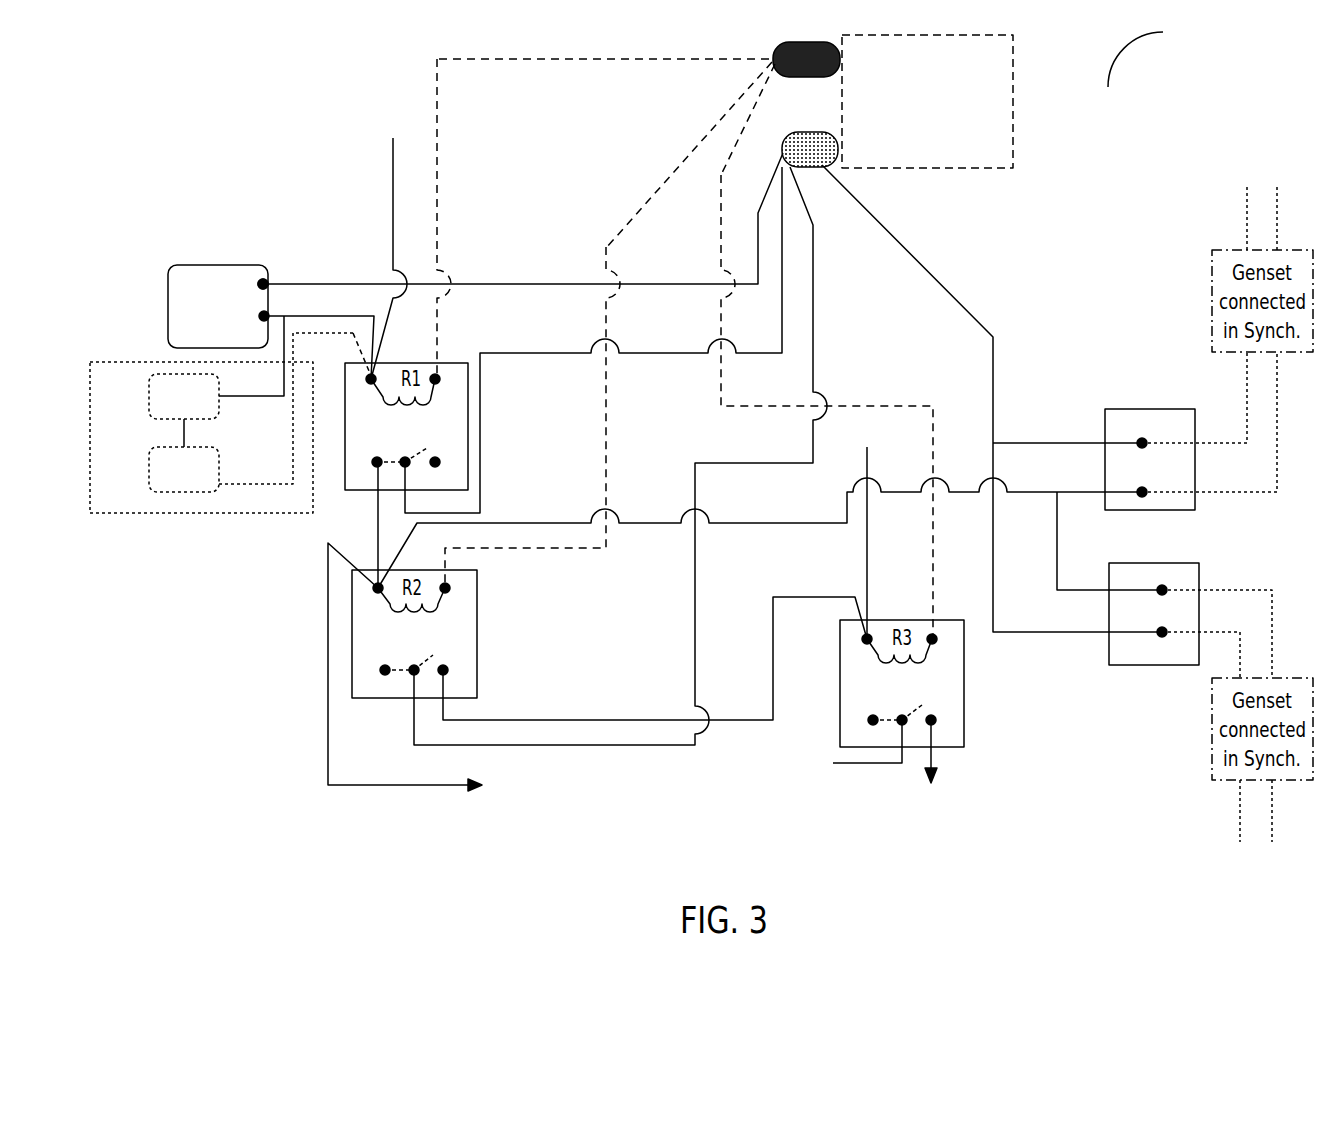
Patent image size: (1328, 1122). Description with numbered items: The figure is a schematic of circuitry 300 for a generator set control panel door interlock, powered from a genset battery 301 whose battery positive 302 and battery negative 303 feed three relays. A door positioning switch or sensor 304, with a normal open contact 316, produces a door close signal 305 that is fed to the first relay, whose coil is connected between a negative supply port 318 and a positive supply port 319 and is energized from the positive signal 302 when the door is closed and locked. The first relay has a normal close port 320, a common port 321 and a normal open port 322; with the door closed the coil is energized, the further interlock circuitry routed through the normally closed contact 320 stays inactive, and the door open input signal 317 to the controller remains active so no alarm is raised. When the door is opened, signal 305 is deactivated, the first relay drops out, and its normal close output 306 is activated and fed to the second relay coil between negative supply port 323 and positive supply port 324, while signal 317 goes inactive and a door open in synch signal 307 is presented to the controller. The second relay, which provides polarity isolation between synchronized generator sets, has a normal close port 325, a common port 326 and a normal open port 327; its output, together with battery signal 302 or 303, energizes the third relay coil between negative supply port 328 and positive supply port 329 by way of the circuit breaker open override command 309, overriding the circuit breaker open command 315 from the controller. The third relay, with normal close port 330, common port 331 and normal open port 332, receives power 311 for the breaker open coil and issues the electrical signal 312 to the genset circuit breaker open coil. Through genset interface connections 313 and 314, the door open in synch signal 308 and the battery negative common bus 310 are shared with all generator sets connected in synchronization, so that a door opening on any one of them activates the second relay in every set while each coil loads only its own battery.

The circuitry 300 is at (1156, 54).
The genset battery 301 is at (927, 101).
The battery positive 302 is at (685, 325).
The battery negative 303 is at (550, 425).
The door positioning switch/sensor 304 is at (229, 389).
The door close signal 305 is at (319, 335).
The R6 normal close output 306 is at (357, 525).
The door open in synch signal to genset controller 307 is at (423, 670).
The door open in synch signal to synchronized genset controllers 308 is at (827, 513).
The CB open override command to relay 309 is at (655, 645).
The battery negative common bus 310 is at (1034, 503).
The power to operate genset circuit breaker open coil 311 is at (840, 747).
The electrical signal to genset circuit breaker open coil 312 is at (937, 768).
The genset interface connection 313 is at (1150, 446).
The genset interface connection 314 is at (1154, 600).
The genset circuit breaker open command 315 is at (866, 530).
The normal open contact of switch or sensor 316 is at (261, 286).
The genset control panel door open input signal to controller 317 is at (390, 245).
The Relay R1 negative supply port to coil 318 is at (360, 394).
The Relay R1 positive supply port to coil 319 is at (446, 393).
The Relay R1 normal close port 320 is at (365, 448).
The Relay R1 common port 321 is at (407, 448).
The Relay R1 normal open port 322 is at (443, 448).
The Relay R2 negative supply port to coil 323 is at (368, 601).
The Relay R2 positive supply port to coil 324 is at (459, 600).
The Relay R2 normal close port 325 is at (375, 656).
The Relay R2 common port 326 is at (413, 656).
The Relay R2 normal open port 327 is at (452, 656).
The Relay R3 negative supply port to coil 328 is at (858, 653).
The Relay R3 positive supply port to coil 329 is at (944, 653).
The Relay R3 normal close port 330 is at (859, 706).
The Relay R3 common port 331 is at (895, 706).
The Relay R3 normal open port 332 is at (943, 706).